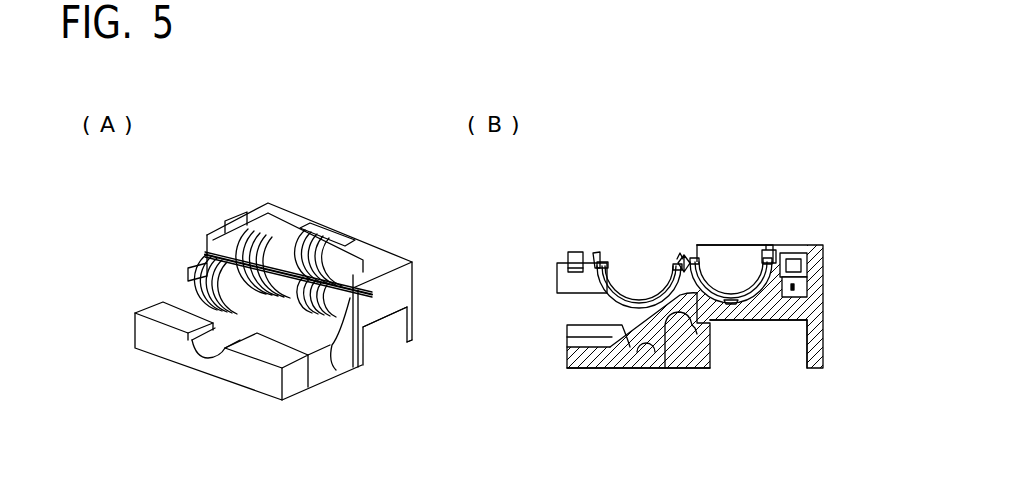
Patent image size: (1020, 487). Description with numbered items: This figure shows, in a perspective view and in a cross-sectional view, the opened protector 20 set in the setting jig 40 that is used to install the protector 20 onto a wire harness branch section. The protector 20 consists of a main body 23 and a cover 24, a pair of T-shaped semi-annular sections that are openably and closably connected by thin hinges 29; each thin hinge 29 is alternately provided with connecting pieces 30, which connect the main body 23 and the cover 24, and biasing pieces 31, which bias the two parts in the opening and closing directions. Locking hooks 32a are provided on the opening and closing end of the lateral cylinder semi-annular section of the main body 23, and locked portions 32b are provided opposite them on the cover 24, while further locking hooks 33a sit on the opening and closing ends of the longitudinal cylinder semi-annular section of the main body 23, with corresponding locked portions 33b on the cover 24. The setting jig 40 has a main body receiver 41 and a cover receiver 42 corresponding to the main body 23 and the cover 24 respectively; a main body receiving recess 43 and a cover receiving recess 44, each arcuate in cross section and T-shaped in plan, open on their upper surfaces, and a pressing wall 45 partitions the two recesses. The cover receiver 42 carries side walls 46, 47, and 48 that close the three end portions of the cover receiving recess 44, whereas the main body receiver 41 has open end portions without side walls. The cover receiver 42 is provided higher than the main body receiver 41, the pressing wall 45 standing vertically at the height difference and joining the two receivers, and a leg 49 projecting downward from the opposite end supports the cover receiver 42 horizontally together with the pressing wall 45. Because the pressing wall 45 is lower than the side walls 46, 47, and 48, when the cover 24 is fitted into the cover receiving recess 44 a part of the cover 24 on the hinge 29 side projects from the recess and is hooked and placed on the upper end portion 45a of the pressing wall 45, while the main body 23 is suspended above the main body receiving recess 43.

In FIG. 5B, the protector 20 is at (558, 255).
In FIG. 5A, the main body 23 is at (183, 268).
In FIG. 5B, the main body 23 is at (625, 285).
In FIG. 5A, the cover 24 is at (280, 240).
In FIG. 5B, the cover 24 is at (712, 270).
In FIG. 5B, the thin hinge 29 is at (685, 256).
In FIG. 5B, the connecting piece 30 is at (668, 280).
In FIG. 5B, the biasing piece 31 is at (683, 265).
In FIG. 5B, the locking hook 32a is at (598, 252).
In FIG. 5B, the locked portion 32b is at (770, 255).
In FIG. 5B, the locking hook 33a is at (578, 250).
In FIG. 5B, the sensor element 33b is at (793, 253).
In FIG. 5A, the setting jig 40 is at (163, 213).
In FIG. 5B, the setting jig 40 is at (822, 262).
In FIG. 5A, the main body receiver 41 is at (342, 378).
In FIG. 5B, the main body receiver 41 is at (600, 368).
In FIG. 5A, the cover receiver 42 is at (383, 327).
In FIG. 5B, the cover receiver 42 is at (780, 320).
In FIG. 5A, the main body receiving recess 43 is at (198, 305).
In FIG. 5B, the main body receiving recess 43 is at (638, 355).
In FIG. 5A, the cover receiving recess 44 is at (240, 238).
In FIG. 5B, the cover receiving recess 44 is at (743, 307).
In FIG. 5A, the pressing wall 45 is at (340, 328).
In FIG. 5B, the pressing wall 45 is at (667, 370).
In FIG. 5B, the upper end portion 45a is at (570, 352).
In FIG. 5A, the side wall 46 is at (393, 287).
In FIG. 5A, the side wall 47 is at (230, 238).
In FIG. 5B, the side wall 47 is at (740, 257).
In FIG. 5A, the side wall 48 is at (323, 242).
In FIG. 5A, the leg 49 is at (413, 316).
In FIG. 5B, the leg 49 is at (820, 350).